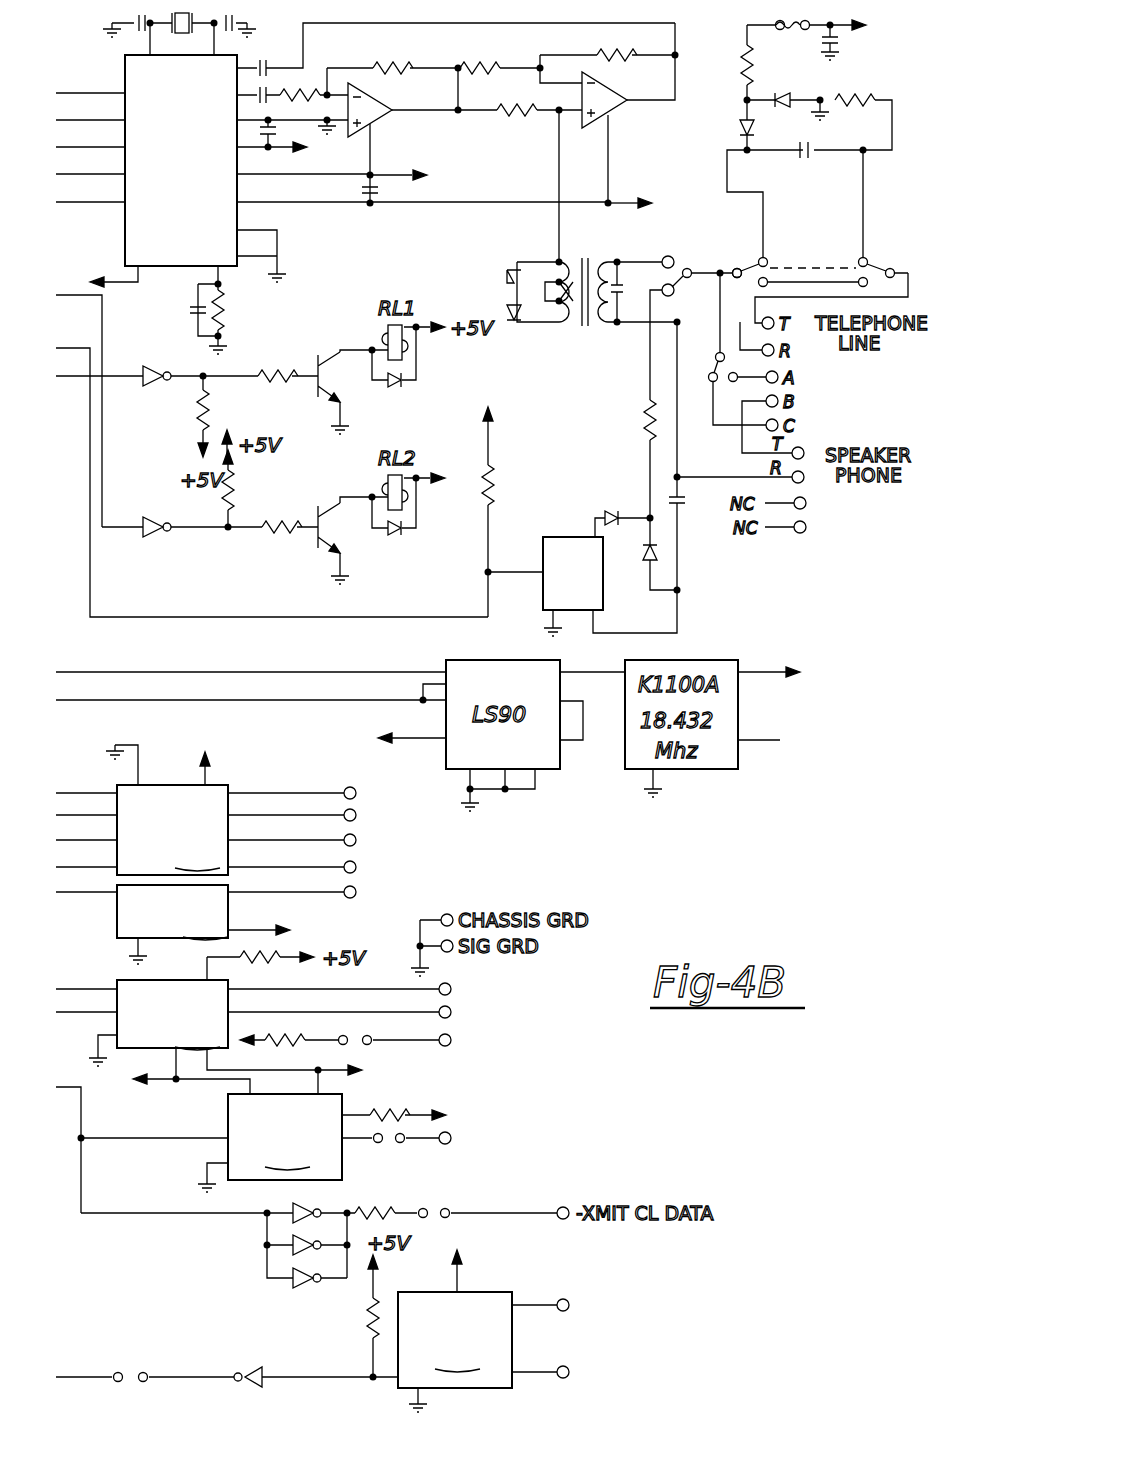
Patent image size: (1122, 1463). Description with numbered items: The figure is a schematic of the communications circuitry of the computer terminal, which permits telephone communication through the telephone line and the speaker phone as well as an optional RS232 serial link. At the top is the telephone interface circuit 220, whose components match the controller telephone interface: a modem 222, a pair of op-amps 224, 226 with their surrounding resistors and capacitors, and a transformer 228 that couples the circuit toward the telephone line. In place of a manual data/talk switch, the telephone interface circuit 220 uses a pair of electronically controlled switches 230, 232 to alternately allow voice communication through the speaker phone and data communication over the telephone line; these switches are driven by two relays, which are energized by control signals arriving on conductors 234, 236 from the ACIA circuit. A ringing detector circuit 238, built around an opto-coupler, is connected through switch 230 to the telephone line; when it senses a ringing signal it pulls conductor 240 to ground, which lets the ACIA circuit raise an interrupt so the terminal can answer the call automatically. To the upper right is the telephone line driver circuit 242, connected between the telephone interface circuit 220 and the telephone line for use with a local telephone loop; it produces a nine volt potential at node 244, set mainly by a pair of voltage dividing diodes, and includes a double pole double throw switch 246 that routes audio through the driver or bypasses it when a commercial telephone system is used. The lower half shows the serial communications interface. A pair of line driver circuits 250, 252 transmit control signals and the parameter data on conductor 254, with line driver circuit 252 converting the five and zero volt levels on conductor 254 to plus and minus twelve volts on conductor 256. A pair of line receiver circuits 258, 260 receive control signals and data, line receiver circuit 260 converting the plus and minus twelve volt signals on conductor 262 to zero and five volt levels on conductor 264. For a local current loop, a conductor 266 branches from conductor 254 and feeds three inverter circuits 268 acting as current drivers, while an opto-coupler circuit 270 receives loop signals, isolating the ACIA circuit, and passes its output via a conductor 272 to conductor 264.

The telephone interface circuit 220 is at (531, 153).
The modem 222 is at (198, 220).
The op-amp 224 is at (380, 115).
The op-amp 226 is at (604, 110).
The transformer 228 is at (574, 343).
The electronically controlled switch 230 is at (675, 266).
The electronically controlled switch 232 is at (714, 367).
The conductor 234 is at (117, 376).
The conductor 236 is at (102, 326).
The ringing detector circuit 238 is at (583, 508).
The conductor 240 is at (456, 578).
The telephone line driver circuit 242 is at (845, 136).
The node 244 is at (749, 163).
The double pole double throw switch 246 is at (870, 268).
The line driver circuit 250 is at (316, 1036).
The line driver circuit 252 is at (347, 1143).
The conductor 254 is at (81, 1127).
The conductor 256 is at (430, 1140).
The line receiver circuit 258 is at (290, 802).
The line receiver circuit 260 is at (230, 924).
The conductor 262 is at (272, 892).
The conductor 264 is at (77, 892).
The conductor 266 is at (170, 1213).
The inverter circuits 268 is at (308, 1286).
The opto-coupler circuit 270 is at (556, 1319).
The conductor 272 is at (210, 1340).